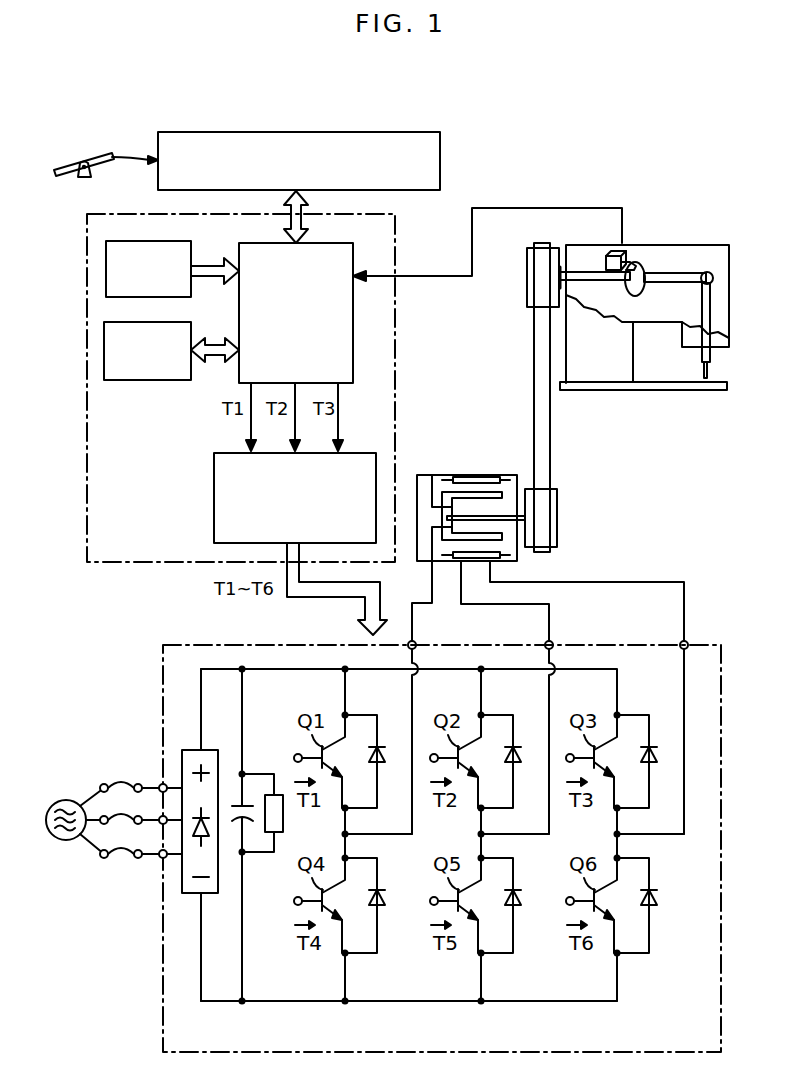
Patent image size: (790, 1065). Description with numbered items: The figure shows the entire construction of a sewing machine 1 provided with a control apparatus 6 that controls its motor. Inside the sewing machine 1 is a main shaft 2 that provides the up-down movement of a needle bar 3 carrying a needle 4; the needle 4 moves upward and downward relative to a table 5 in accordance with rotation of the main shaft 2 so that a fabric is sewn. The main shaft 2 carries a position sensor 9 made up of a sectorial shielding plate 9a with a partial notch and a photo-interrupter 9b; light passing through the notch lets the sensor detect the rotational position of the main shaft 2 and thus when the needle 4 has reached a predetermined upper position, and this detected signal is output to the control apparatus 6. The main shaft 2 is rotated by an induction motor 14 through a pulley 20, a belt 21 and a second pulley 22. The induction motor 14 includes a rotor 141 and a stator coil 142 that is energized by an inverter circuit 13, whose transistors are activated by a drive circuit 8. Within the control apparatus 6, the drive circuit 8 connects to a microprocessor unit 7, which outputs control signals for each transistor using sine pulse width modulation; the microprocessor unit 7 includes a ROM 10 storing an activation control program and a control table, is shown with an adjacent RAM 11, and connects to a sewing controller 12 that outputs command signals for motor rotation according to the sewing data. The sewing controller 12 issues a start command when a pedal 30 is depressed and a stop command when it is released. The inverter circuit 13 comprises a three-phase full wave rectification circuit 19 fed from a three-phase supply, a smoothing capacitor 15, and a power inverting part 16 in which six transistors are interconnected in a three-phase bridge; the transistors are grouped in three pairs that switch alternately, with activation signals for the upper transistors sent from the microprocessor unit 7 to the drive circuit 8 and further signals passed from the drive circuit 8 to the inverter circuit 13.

The sewing machine 1 is at (716, 226).
The main shaft 2 is at (587, 282).
The needle bar 3 is at (710, 353).
The needle 4 is at (708, 373).
The table 5 is at (652, 392).
The control apparatus 6 is at (397, 238).
The microprocessor unit 7 is at (355, 245).
The drive circuit 8 is at (214, 462).
The position sensor 9 is at (629, 238).
The sectorial shielding plate 9a is at (633, 295).
The photo-interrupter 9b is at (640, 262).
The ROM 10 is at (183, 243).
The RAM 11 is at (128, 382).
The sewing controller 12 is at (442, 145).
The inverter circuit 13 is at (163, 656).
The induction motor 14 is at (471, 491).
The smoothing capacitor 15 is at (227, 818).
The power inverting part 16 is at (600, 1014).
The three-phase full wave rectification circuit 19 is at (180, 893).
The pulley 20 is at (523, 282).
The belt 21 is at (532, 365).
The pulley 22 is at (557, 520).
The pedal 30 is at (70, 167).
The rotor 141 is at (510, 492).
The stator coil 142 is at (448, 477).